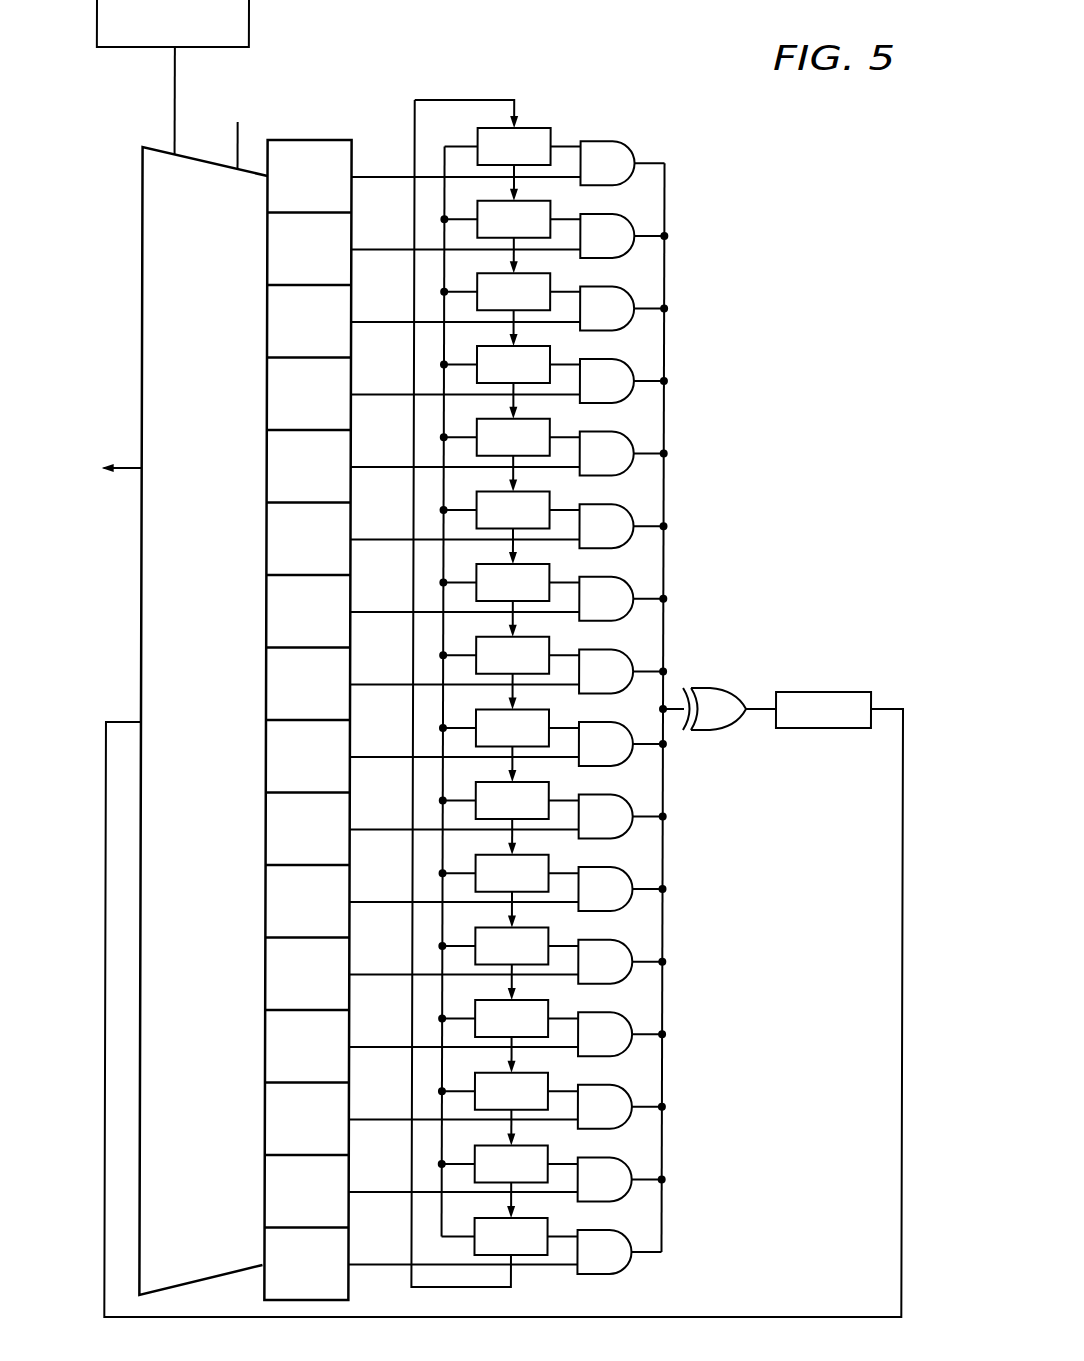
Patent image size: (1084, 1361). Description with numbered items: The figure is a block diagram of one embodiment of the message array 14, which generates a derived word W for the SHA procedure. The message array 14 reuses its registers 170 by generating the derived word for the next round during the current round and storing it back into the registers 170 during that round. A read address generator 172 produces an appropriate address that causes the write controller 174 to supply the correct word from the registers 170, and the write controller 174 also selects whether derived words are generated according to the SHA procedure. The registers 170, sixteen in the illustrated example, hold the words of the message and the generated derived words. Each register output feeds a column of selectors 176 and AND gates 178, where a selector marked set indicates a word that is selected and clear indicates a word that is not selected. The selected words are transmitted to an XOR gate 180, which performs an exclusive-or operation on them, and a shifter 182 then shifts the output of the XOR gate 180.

The message array 14 is at (690, 56).
The registers 170 is at (310, 125).
The read address generator 172 is at (140, 48).
The write controller 174 is at (142, 598).
The selectors 176 is at (544, 114).
The AND gates 178 is at (605, 128).
The XOR gate 180 is at (721, 688).
The shifter 182 is at (826, 692).